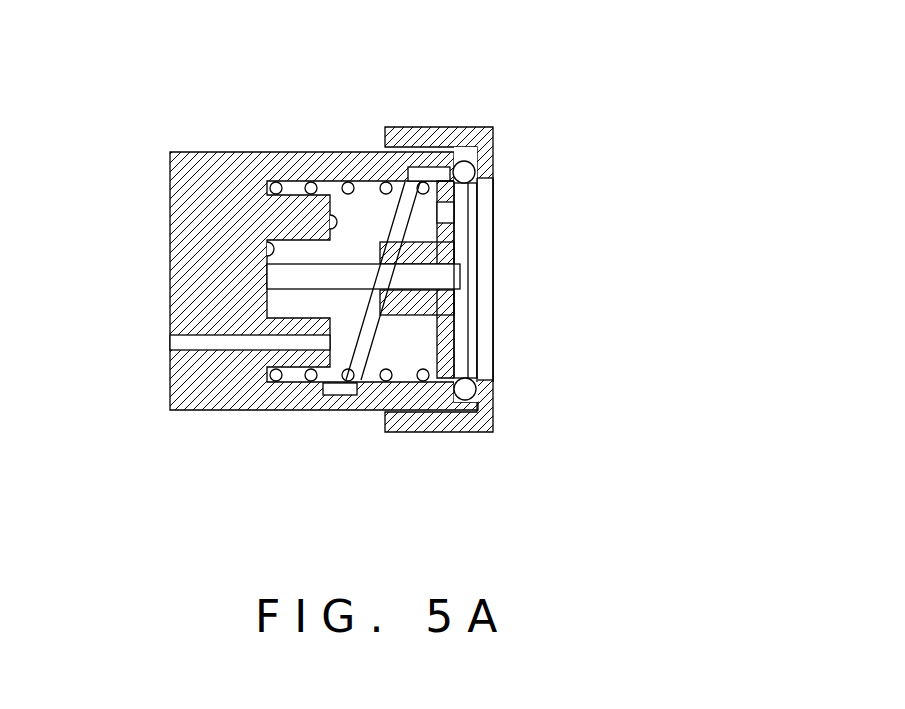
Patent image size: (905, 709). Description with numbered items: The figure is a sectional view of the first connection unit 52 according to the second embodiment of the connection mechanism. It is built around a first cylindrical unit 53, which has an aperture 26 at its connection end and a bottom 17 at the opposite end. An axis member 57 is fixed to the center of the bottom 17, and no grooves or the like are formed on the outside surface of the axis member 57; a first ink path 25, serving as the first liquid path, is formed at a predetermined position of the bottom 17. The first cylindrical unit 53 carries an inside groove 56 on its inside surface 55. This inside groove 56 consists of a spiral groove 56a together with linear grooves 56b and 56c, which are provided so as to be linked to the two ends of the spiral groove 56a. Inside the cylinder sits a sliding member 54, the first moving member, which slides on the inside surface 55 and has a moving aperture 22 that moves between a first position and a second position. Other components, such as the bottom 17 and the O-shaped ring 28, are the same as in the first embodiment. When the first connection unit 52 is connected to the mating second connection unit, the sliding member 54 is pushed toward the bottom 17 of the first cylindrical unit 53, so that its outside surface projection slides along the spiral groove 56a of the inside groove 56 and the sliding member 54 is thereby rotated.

The first connection unit 52 is at (531, 78).
The bottom 17 is at (333, 225).
The first cylindrical unit 53 is at (285, 152).
The spiral groove 56a is at (398, 213).
The inside groove 56 is at (470, 312).
The O-shaped ring 28 is at (462, 162).
The linear groove 56b is at (447, 213).
The sliding member 54 is at (447, 248).
The moving aperture 22 is at (477, 215).
The first ink path 25 is at (190, 340).
The axis member 57 is at (432, 280).
The aperture 26 is at (456, 330).
The linear groove 56c is at (343, 388).
The inside surface 55 is at (405, 380).